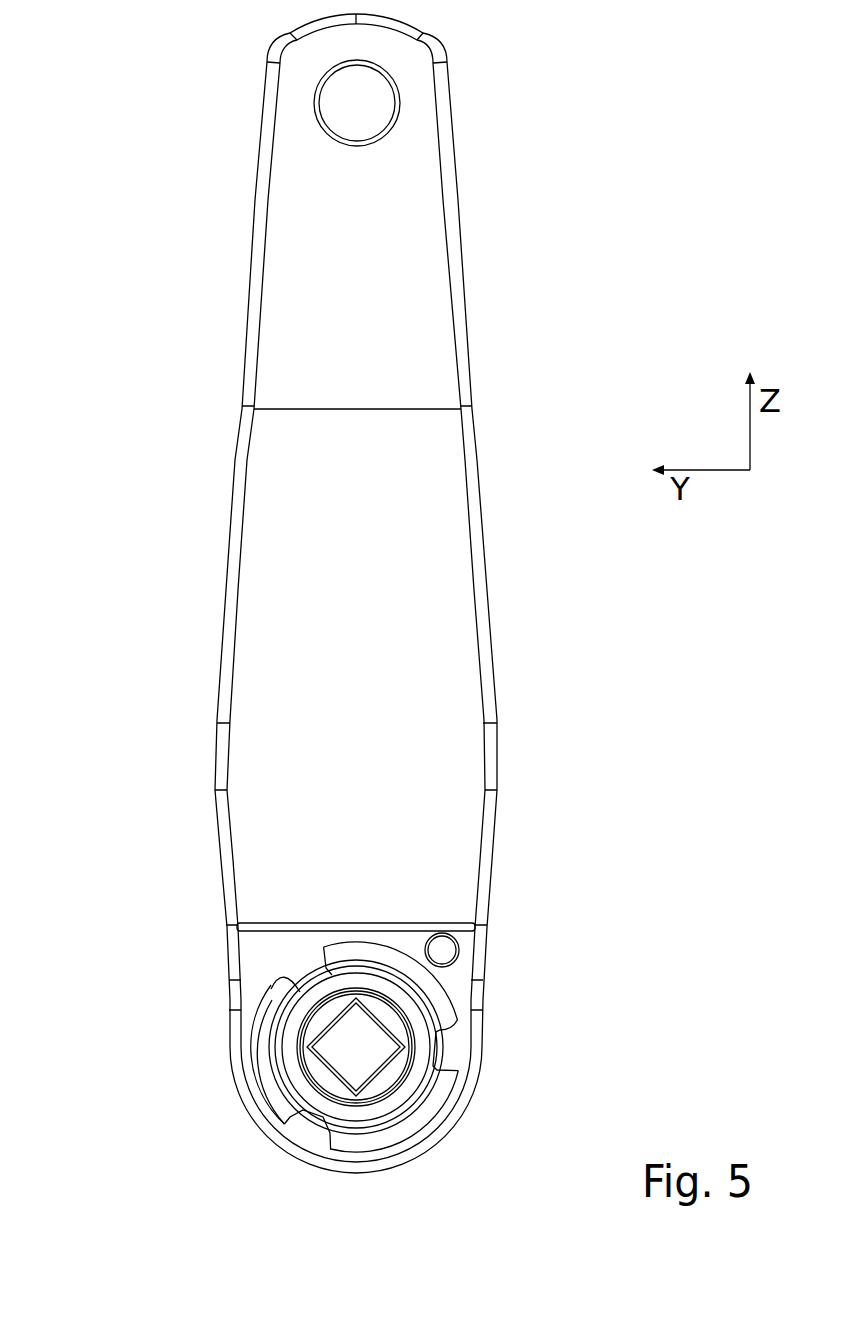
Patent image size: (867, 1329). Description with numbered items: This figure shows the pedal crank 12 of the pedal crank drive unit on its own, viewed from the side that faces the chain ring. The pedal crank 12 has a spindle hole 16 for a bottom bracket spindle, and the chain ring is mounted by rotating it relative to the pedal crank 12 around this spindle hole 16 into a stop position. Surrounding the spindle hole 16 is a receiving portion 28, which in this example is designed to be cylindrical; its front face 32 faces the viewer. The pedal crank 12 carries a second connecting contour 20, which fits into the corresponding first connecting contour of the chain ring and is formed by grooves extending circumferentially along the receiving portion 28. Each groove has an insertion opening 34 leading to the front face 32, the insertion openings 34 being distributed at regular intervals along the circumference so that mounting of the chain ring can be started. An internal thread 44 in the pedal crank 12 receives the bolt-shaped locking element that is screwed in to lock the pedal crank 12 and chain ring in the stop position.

The pedal crank 12 is at (468, 343).
The spindle hole 16 is at (355, 1047).
The second connecting contour 20 is at (262, 1000).
The receiving portion 28 is at (267, 1080).
The front face 32 is at (358, 982).
The insertion opening 34 is at (310, 973).
The internal thread 44 is at (443, 950).